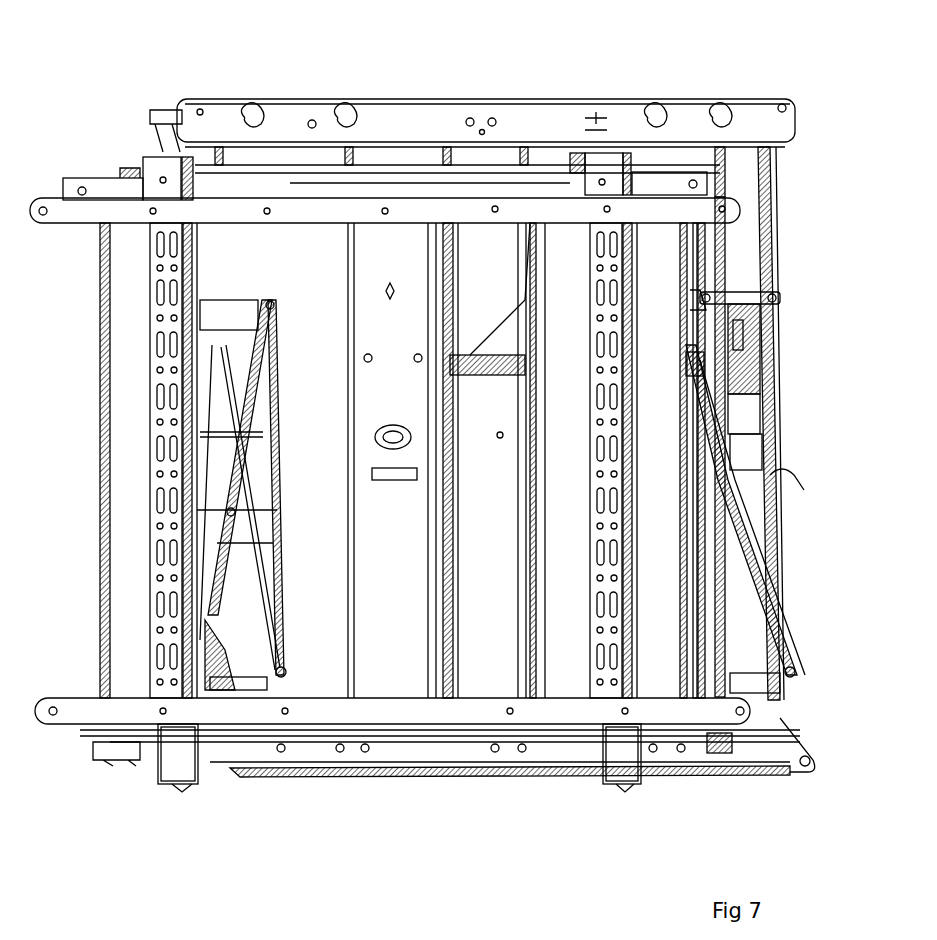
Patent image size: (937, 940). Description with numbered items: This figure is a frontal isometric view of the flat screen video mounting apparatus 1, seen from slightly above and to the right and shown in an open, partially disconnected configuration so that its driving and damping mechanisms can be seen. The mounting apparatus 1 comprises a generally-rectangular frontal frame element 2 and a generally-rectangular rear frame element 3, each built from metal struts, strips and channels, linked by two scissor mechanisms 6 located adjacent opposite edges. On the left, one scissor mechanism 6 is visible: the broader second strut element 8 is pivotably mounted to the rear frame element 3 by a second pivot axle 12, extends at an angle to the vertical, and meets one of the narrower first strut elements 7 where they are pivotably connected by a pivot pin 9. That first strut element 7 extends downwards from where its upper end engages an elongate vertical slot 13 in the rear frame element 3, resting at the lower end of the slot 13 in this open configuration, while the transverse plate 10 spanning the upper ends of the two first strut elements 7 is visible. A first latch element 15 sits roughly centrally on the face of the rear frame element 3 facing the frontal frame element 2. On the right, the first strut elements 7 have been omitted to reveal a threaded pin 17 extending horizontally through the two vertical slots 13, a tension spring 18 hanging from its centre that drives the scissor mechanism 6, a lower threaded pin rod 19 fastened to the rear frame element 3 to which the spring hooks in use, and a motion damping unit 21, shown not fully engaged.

The mounting apparatus 1 is at (86, 55).
The frontal frame element 2 is at (578, 712).
The rear frame element 3 is at (436, 115).
The scissor mechanism 6 is at (292, 548).
The first strut element 7 is at (215, 441).
The second strut element 8 is at (225, 633).
The pivot pin 9 is at (235, 513).
The transverse plate 10 is at (215, 312).
The second pivot axle 12 is at (280, 745).
The elongate vertical slot 13 is at (240, 240).
The first latch element 15 is at (490, 362).
The threaded pin 17 is at (750, 300).
The tension spring 18 is at (755, 385).
The lower threaded pin rod 19 is at (790, 472).
The motion damping unit 21 is at (760, 430).